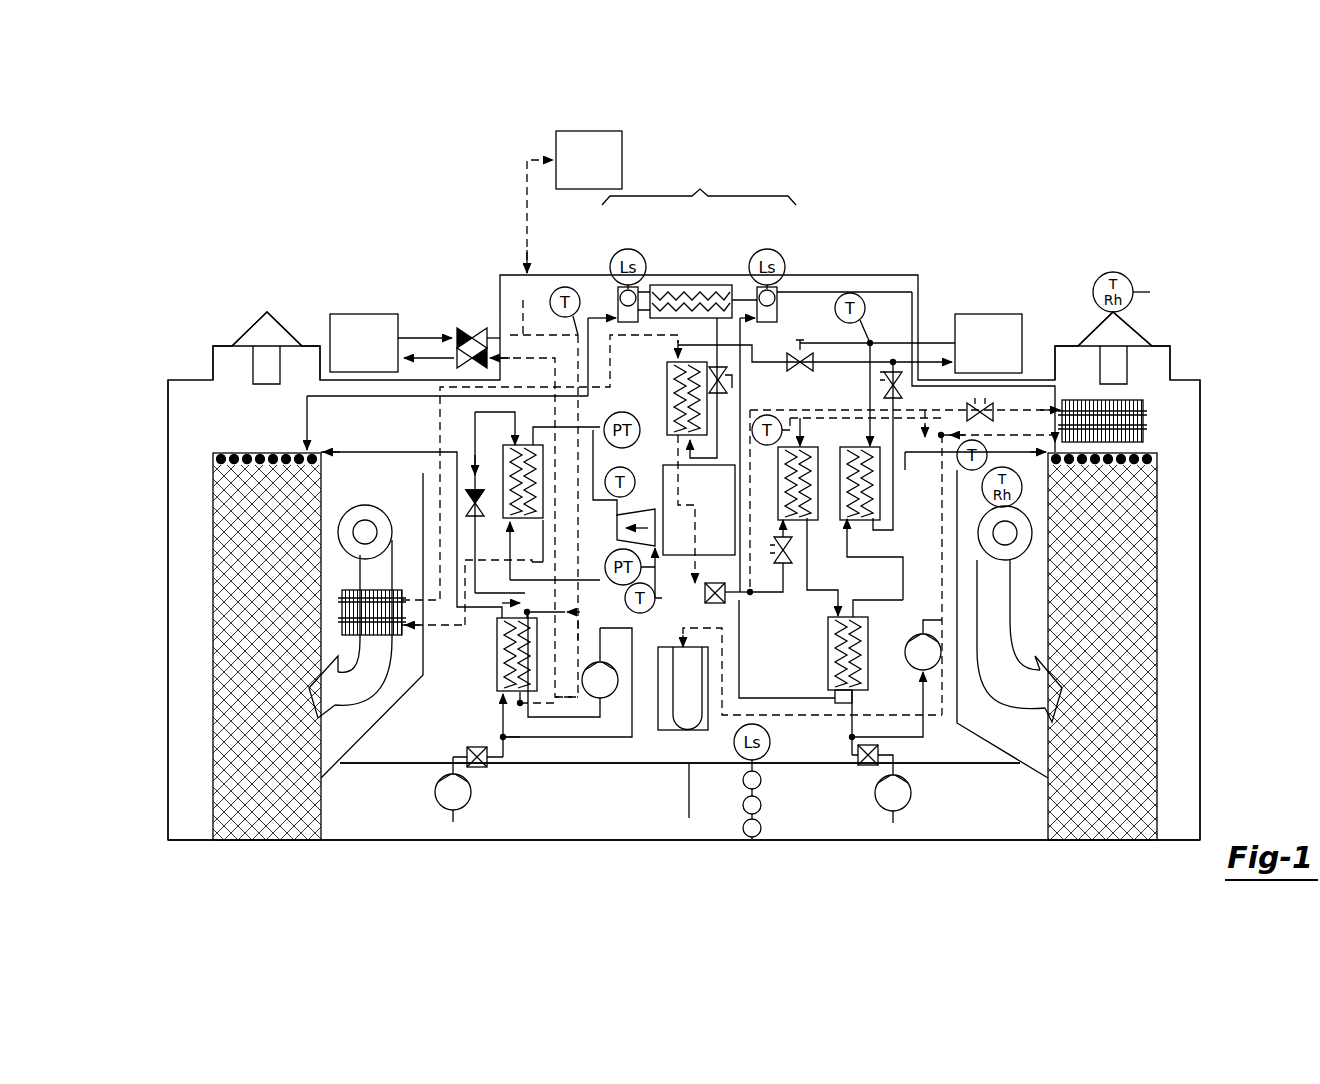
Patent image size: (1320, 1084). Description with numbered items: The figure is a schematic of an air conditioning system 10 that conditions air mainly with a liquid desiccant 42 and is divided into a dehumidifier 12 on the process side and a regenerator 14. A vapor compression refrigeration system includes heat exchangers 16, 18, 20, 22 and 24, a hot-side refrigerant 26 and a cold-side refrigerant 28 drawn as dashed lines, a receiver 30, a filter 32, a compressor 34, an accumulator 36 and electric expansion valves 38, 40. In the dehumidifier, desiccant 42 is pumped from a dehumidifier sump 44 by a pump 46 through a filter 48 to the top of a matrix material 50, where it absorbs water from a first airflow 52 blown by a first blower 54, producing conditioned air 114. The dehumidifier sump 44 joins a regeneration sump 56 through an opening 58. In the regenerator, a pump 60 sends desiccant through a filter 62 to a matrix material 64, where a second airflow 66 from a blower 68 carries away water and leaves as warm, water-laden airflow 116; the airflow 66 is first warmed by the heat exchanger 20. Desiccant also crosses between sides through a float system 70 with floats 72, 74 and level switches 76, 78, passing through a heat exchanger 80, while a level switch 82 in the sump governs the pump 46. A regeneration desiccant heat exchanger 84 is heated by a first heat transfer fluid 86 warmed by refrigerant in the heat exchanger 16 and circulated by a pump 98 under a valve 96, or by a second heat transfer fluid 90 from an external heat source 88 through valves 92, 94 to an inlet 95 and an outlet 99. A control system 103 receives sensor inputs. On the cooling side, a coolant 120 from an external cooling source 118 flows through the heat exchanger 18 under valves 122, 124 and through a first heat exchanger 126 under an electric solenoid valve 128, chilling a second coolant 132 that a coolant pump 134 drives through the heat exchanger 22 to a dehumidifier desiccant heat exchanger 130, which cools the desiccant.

The air conditioning system 10 is at (433, 193).
The dehumidifier 12 is at (1203, 493).
The regenerator 14 is at (165, 500).
The refrigeration system heat exchanger 16 is at (503, 455).
The refrigeration system heat exchanger 18 is at (707, 412).
The heat exchanger 20 is at (402, 633).
The refrigeration system heat exchanger 22 is at (805, 440).
The heat exchanger 24 is at (1143, 413).
The refrigerant 26 is at (440, 412).
The refrigerant 28 is at (895, 718).
The receiver 30 is at (703, 493).
The filter 32 is at (722, 606).
The compressor 34 is at (640, 510).
The accumulator 36 is at (682, 732).
The electric expansion valve 38 is at (790, 565).
The electric expansion valve 40 is at (993, 408).
The liquid desiccant 42 is at (1183, 798).
The dehumidifier sump 44 is at (990, 840).
The pump 46 is at (910, 797).
The filter 48 is at (880, 753).
The matrix material 50 is at (1157, 610).
The first airflow 52 is at (1012, 620).
The first blower 54 is at (1028, 528).
The regeneration sump 56 is at (498, 840).
The opening 58 is at (685, 828).
The pump 60 is at (437, 795).
The filter 62 is at (467, 748).
The matrix material 64 is at (213, 630).
The second airflow 66 is at (347, 706).
The blower 68 is at (366, 505).
The float system 70 is at (699, 185).
The float 72 is at (606, 290).
The float 74 is at (785, 290).
The level switch 76 is at (630, 249).
The level switch 78 is at (769, 249).
The heat exchanger 80 is at (690, 285).
The level switch 82 is at (770, 742).
The regeneration desiccant heat exchanger 84 is at (497, 682).
The first heat transfer fluid 86 is at (505, 412).
The external heat source 88 is at (364, 314).
The second heat transfer fluid 90 is at (545, 459).
The valve 92 is at (476, 328).
The valve 94 is at (468, 348).
The inlet 95 is at (545, 625).
The valve 96 is at (482, 515).
The pump 98 is at (606, 662).
The outlet 99 is at (503, 737).
The control system 103 is at (589, 131).
The conditioned air 114 is at (1140, 323).
The airflow 116 is at (248, 330).
The external cooling source 118 is at (988, 314).
The coolant 120 is at (940, 343).
The valve 122 is at (735, 380).
The valve 124 is at (820, 356).
The first heat exchanger 126 is at (850, 518).
The electric solenoid valve 128 is at (905, 398).
The dehumidifier desiccant heat exchanger 130 is at (828, 664).
The second coolant 132 is at (912, 632).
The coolant pump 134 is at (962, 710).